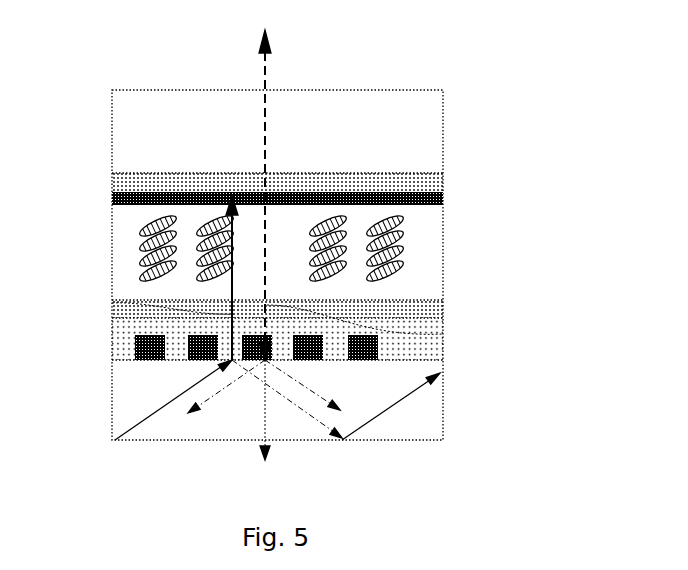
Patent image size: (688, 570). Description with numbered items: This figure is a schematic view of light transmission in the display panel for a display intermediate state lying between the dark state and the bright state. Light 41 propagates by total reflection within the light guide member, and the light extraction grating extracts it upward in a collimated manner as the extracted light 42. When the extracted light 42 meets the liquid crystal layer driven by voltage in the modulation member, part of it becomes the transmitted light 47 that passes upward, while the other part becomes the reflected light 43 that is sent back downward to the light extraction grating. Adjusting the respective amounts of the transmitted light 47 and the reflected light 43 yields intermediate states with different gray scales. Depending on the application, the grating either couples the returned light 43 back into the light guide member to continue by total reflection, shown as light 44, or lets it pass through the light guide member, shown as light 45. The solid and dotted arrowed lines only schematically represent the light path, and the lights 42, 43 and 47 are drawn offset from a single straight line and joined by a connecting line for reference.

The light propagating by total reflection 41 is at (172, 404).
The extracted light 42 is at (112, 303).
The reflected light 43 is at (443, 334).
The coupled returned light 44 is at (220, 392).
The transmitted returned light 45 is at (267, 418).
The transmitted light 47 is at (265, 80).